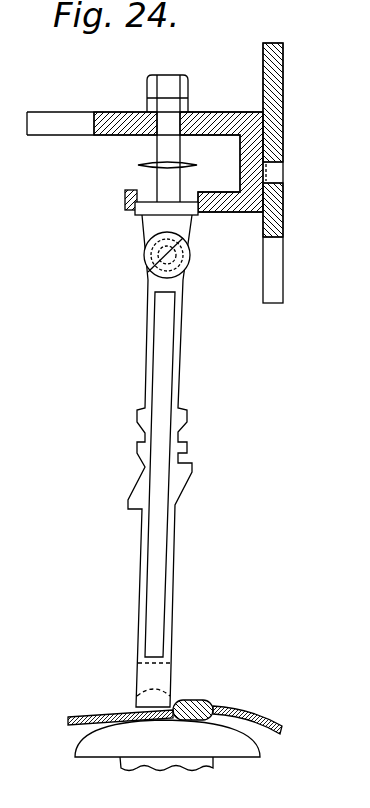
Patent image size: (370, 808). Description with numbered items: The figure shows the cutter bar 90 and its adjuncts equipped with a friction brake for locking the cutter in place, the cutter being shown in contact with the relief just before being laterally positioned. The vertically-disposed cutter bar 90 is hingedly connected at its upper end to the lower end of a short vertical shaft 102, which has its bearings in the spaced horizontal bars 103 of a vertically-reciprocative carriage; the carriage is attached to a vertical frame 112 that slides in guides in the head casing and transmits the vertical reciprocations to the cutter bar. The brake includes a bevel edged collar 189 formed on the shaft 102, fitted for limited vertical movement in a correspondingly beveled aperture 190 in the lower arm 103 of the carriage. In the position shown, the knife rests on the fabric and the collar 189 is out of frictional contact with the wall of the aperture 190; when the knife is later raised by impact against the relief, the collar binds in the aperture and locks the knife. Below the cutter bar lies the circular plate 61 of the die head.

The circular plate 61 is at (88, 743).
The cutter bar 90 is at (170, 562).
The short vertical shaft 102 is at (163, 142).
The horizontal bars of the carriage 103 is at (110, 112).
The vertical frame 112 is at (283, 76).
The bevel edged collar 189 is at (150, 207).
The beveled aperture 190 is at (140, 192).